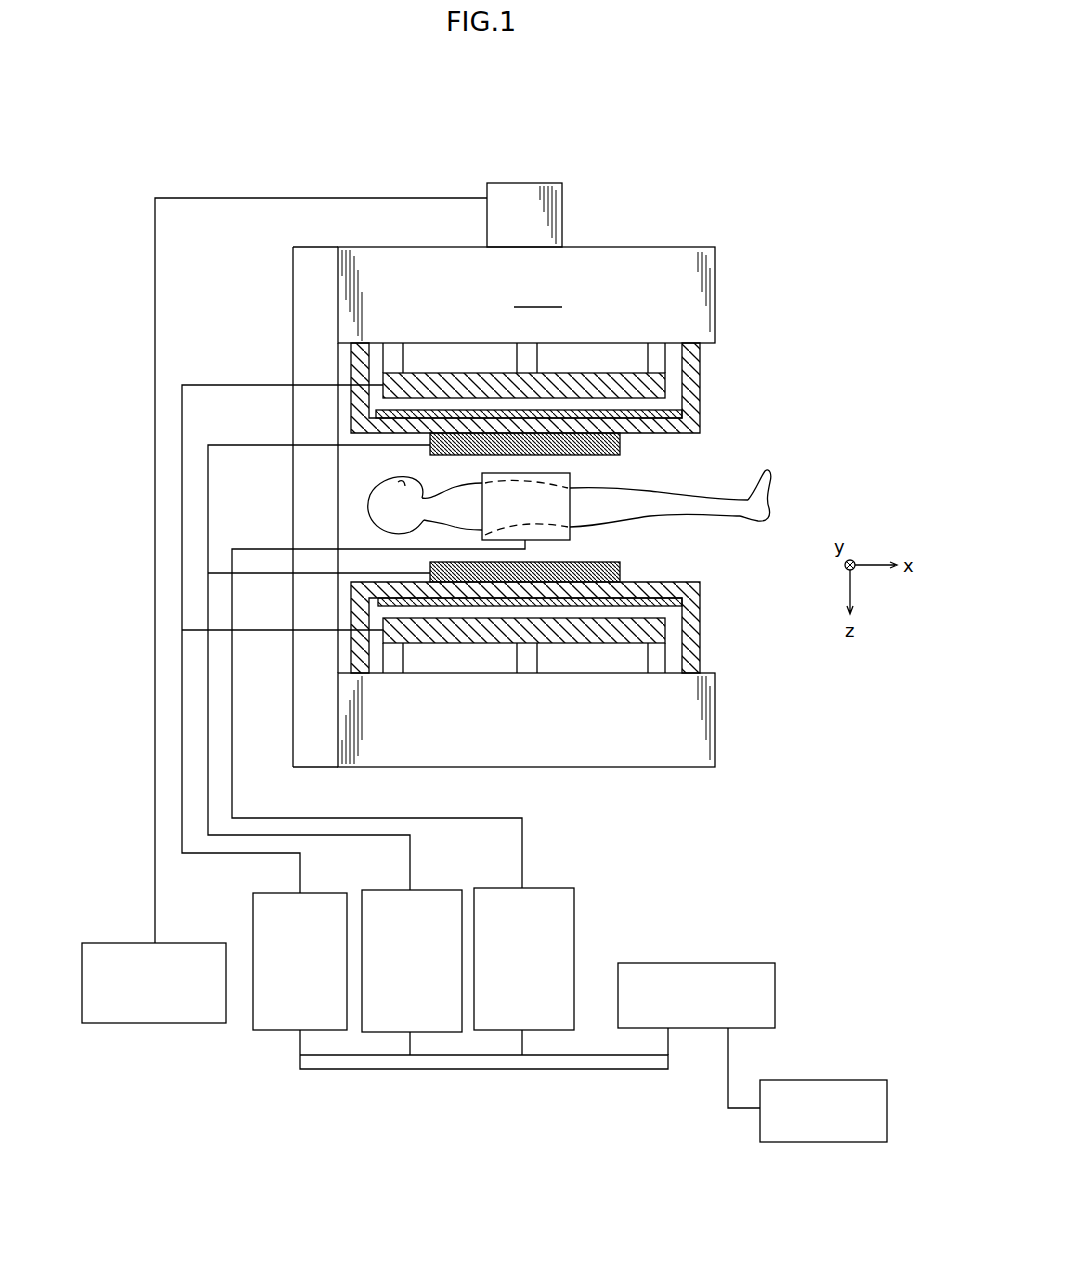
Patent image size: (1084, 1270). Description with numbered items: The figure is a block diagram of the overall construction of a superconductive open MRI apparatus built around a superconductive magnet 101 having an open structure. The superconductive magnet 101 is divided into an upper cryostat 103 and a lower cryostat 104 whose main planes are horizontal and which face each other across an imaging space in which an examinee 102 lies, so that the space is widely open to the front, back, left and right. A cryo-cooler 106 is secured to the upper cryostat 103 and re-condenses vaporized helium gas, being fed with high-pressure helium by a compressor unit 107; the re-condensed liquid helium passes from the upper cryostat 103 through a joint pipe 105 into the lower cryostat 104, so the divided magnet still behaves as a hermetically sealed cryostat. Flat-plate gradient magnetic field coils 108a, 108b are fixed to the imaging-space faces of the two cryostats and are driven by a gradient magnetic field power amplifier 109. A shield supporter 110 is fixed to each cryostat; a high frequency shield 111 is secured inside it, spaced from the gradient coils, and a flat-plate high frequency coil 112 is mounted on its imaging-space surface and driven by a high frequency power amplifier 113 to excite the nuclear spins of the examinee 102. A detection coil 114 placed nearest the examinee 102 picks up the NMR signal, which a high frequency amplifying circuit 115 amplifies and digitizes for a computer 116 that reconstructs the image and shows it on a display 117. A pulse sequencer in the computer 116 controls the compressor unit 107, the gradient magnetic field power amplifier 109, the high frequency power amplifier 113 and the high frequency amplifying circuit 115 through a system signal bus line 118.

The superconductive magnet 101 is at (537, 294).
The examinee 102 is at (772, 502).
The upper cryostat 103 is at (717, 297).
The lower cryostat 104 is at (717, 740).
The joint pipe 105 is at (297, 527).
The cryo-cooler 106 is at (563, 222).
The compressor unit 107 is at (175, 941).
The gradient magnetic field coil 108a is at (665, 387).
The gradient magnetic field coil 108b is at (665, 631).
The gradient magnetic field power amplifier 109 is at (310, 891).
The shield supporter 110 is at (700, 419).
The high frequency shield 111 is at (681, 411).
The high frequency coil 112 is at (620, 445).
The high frequency power amplifier 113 is at (422, 887).
The detection coil 114 is at (572, 483).
The high frequency amplifying circuit 115 is at (547, 886).
The computer 116 is at (712, 963).
The display 117 is at (827, 1080).
The system signal bus line 118 is at (588, 1070).